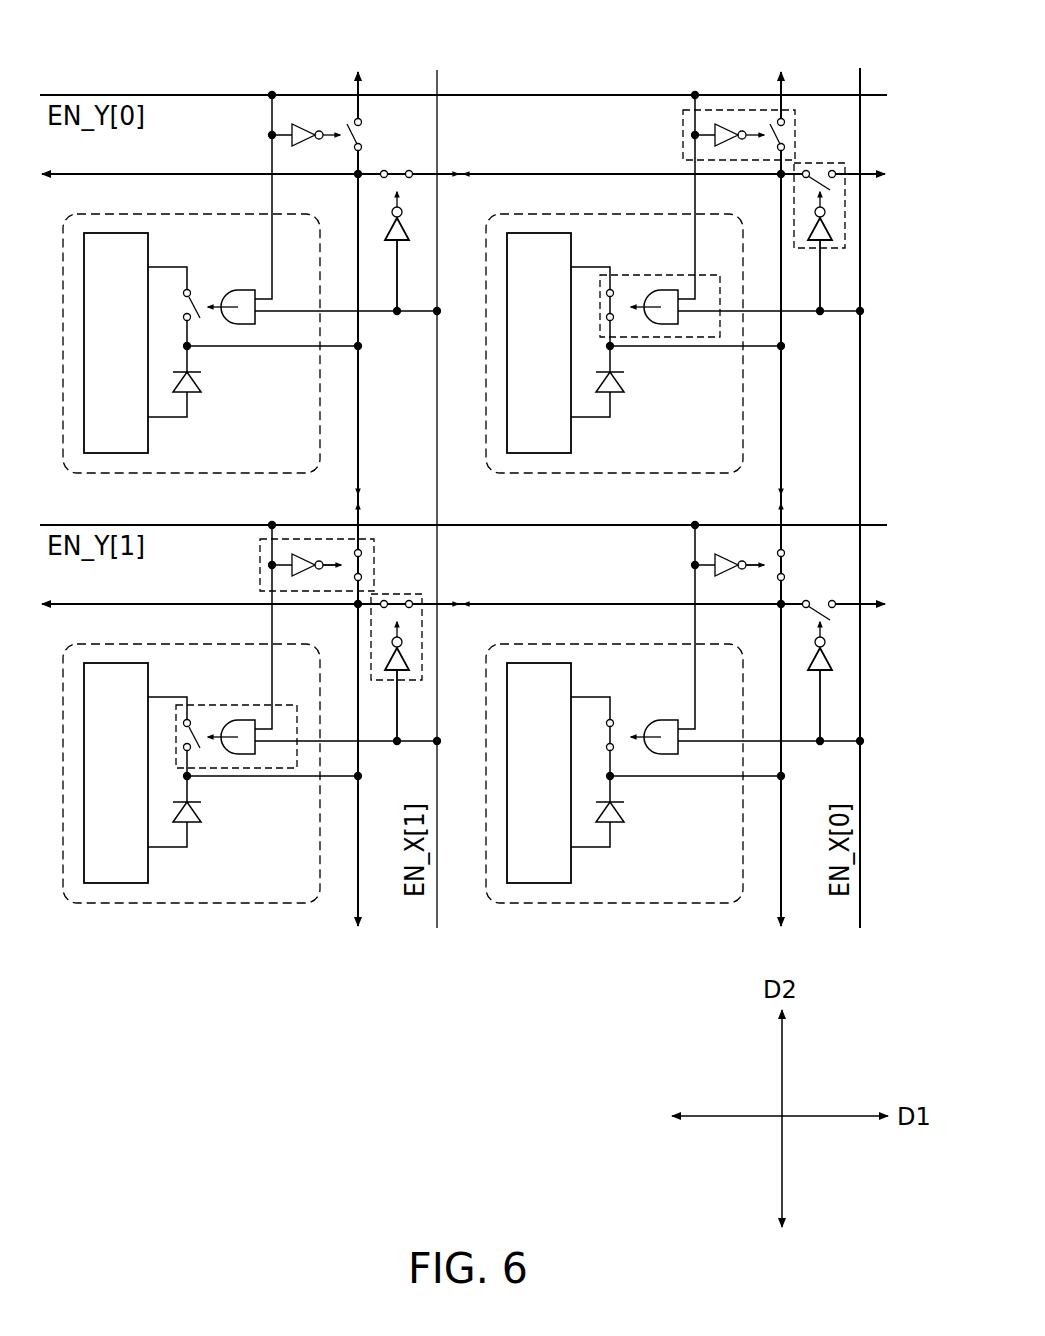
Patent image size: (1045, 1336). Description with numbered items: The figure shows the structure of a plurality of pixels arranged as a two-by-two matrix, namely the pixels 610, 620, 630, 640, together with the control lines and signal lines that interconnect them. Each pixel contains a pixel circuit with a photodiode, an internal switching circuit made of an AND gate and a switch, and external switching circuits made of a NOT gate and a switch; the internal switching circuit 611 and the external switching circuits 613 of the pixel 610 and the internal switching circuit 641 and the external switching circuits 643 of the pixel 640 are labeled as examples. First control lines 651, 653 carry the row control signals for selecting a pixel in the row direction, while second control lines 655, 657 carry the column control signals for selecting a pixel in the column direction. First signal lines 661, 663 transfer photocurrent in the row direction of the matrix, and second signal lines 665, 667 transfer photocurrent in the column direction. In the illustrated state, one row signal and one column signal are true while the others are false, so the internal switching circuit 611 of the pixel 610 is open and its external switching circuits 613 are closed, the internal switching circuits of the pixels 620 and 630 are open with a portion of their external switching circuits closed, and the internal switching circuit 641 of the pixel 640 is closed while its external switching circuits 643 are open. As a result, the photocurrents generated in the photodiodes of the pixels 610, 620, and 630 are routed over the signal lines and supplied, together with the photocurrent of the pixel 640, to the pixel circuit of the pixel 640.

The pixel 610 is at (250, 732).
The internal switching circuit 611 is at (205, 705).
The external switching circuits 613 is at (374, 565).
The pixel 620 is at (613, 903).
The pixel 630 is at (190, 473).
The pixel 640 is at (673, 302).
The internal switching circuit 641 is at (628, 275).
The external switching circuits 643 is at (795, 135).
The first control line 651 is at (870, 525).
The first control line 653 is at (870, 95).
The second control line 655 is at (432, 80).
The second control line 657 is at (855, 80).
The first signal line 661 is at (870, 604).
The first signal line 663 is at (870, 180).
The second signal line 665 is at (350, 80).
The second signal line 667 is at (773, 80).